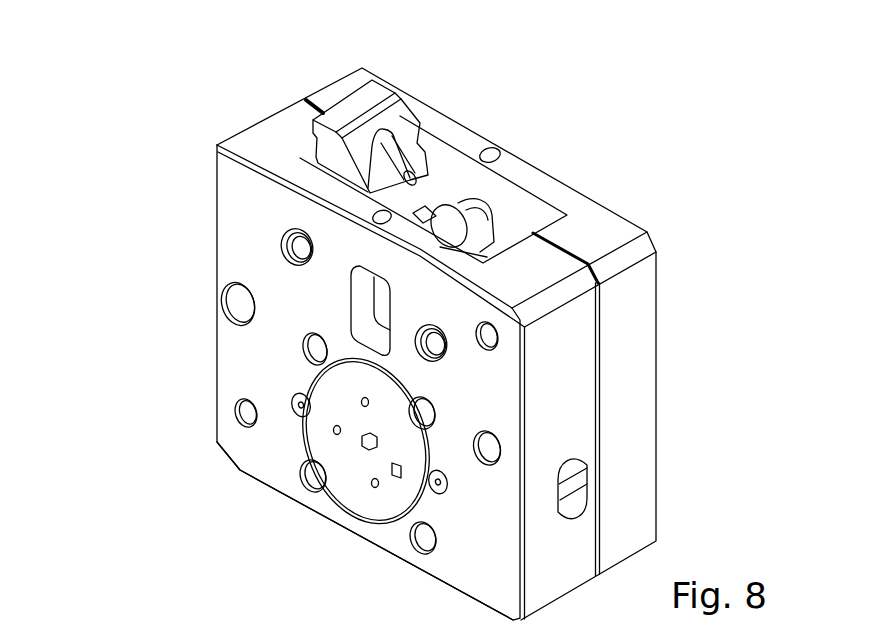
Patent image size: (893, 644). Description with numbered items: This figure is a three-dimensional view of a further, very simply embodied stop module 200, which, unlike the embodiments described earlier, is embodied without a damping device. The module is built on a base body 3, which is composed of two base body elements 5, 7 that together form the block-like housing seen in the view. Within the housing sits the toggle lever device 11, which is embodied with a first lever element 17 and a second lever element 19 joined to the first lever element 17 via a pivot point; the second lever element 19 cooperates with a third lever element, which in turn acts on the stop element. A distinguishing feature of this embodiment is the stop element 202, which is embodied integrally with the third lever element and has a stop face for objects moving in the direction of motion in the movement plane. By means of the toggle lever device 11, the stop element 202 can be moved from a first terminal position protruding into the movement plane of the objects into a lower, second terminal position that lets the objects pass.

The stop module 200 is at (178, 142).
The stop element 202 is at (350, 110).
The base body element 7 is at (440, 125).
The second lever element 19 is at (416, 182).
The toggle lever device 11 is at (492, 208).
The first lever element 17 is at (506, 242).
The base body element 5 is at (235, 210).
The base body 3 is at (246, 467).